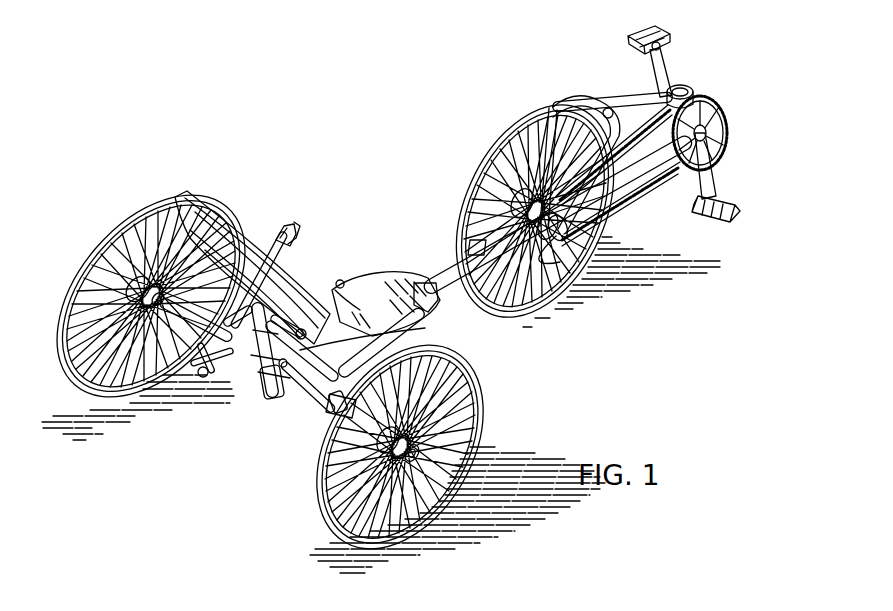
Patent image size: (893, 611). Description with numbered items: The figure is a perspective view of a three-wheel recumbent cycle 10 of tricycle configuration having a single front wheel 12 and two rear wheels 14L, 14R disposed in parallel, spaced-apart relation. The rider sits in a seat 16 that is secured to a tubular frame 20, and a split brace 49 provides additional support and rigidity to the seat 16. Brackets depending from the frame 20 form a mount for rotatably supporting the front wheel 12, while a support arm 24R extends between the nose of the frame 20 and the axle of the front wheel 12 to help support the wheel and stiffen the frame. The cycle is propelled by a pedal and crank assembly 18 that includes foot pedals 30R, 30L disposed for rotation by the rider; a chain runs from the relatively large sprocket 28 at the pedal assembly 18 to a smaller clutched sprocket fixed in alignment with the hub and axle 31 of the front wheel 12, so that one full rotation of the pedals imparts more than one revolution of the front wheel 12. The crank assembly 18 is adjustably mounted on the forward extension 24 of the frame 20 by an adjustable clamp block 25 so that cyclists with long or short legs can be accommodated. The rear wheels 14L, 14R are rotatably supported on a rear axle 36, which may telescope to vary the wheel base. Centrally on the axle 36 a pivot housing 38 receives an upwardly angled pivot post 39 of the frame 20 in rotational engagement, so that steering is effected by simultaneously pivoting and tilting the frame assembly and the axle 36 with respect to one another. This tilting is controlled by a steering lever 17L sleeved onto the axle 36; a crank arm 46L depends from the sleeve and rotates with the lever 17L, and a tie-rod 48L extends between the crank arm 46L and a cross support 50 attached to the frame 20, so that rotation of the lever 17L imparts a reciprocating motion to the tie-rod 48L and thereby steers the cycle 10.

The recumbent cycle 10 is at (368, 97).
The front wheel 12 is at (548, 308).
The left rear wheel 14L is at (116, 230).
The right rear wheel 14R is at (462, 482).
The seat 16 is at (210, 226).
The left steering lever 17L is at (262, 240).
The pedal and crank assembly 18 is at (732, 133).
The tubular frame 20 is at (430, 270).
The forward extension of the frame 24 is at (640, 100).
The right support arm 24R is at (637, 196).
The adjustable clamp block 25 is at (686, 90).
The large sprocket 28 is at (722, 110).
The left foot pedal 30L is at (655, 37).
The right foot pedal 30R is at (737, 208).
The hub and axle of the front wheel 31 is at (515, 178).
The rear axle 36 is at (312, 406).
The pivot housing 38 is at (270, 406).
The pivot post 39 is at (310, 377).
The left crank arm 46L is at (186, 368).
The left tie-rod 48L is at (335, 290).
The split brace 49 is at (242, 370).
The cross support 50 is at (370, 282).